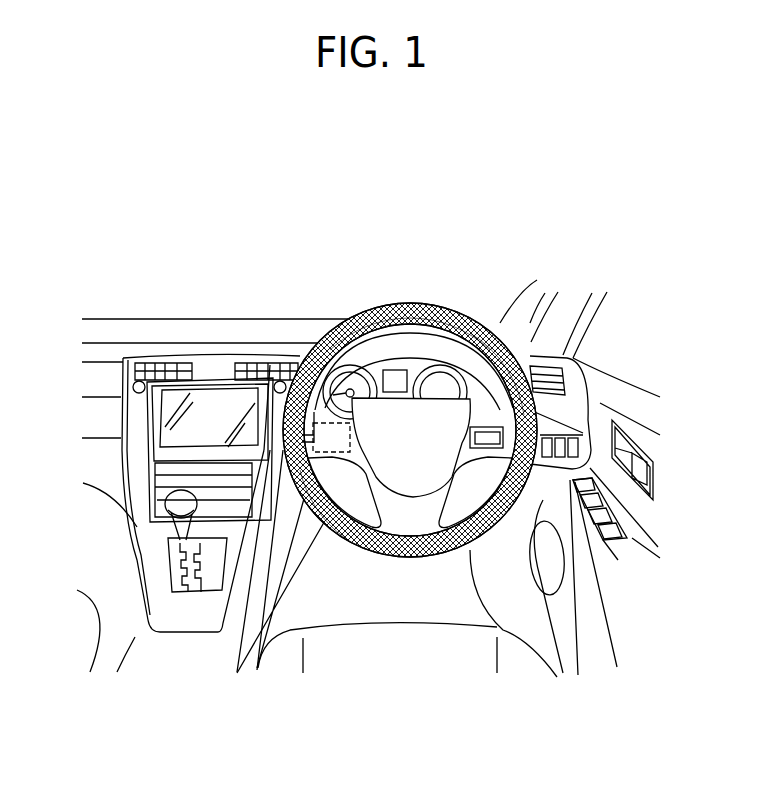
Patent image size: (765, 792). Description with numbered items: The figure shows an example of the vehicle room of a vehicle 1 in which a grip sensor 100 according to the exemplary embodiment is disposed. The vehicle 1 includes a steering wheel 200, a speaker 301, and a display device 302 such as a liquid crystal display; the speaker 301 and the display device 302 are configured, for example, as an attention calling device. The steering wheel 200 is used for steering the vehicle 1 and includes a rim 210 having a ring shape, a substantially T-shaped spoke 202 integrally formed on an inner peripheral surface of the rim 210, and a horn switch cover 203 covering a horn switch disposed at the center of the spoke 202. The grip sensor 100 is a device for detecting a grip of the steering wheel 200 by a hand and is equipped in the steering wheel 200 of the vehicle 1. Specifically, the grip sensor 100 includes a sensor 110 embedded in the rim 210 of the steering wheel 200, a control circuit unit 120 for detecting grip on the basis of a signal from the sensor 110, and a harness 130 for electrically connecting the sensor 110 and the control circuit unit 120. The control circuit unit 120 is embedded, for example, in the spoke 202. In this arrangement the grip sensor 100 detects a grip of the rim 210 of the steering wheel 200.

The vehicle 1 is at (462, 232).
The grip sensor 100 is at (363, 416).
The sensor 110 is at (410, 305).
The control circuit unit 120 is at (333, 443).
The harness 130 is at (310, 412).
The steering wheel 200 is at (498, 403).
The spoke 202 is at (470, 457).
The horn switch cover 203 is at (428, 420).
The rim 210 is at (465, 308).
The speaker 301 is at (548, 560).
The display device 302 is at (172, 430).